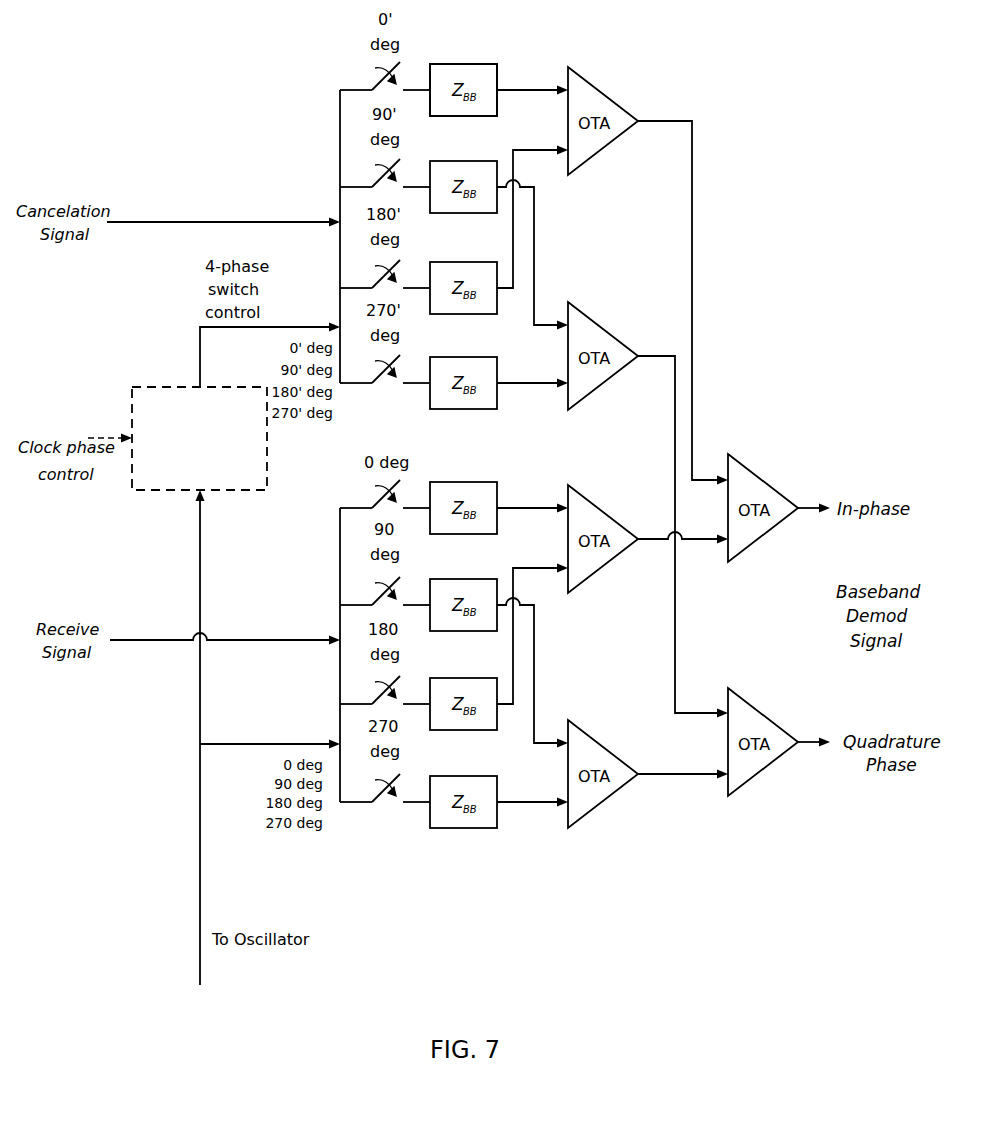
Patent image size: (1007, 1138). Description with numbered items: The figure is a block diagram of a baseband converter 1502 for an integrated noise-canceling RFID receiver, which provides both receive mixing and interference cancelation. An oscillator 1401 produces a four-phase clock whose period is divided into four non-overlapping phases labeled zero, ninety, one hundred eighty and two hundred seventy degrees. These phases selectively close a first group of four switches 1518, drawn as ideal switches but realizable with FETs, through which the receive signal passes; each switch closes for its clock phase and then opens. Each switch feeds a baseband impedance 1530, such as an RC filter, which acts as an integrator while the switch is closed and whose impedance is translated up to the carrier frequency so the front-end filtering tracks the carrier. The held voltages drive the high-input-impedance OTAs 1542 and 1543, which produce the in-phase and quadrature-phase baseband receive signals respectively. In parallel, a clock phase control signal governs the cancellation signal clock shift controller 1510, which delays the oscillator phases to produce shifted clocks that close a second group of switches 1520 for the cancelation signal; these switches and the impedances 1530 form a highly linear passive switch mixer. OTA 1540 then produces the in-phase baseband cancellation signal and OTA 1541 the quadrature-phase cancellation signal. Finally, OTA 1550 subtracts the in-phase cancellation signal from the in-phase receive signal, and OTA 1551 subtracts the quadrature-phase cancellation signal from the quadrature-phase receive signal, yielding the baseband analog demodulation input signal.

The oscillator 1401 is at (240, 737).
The baseband converter 1502 is at (665, 878).
The cancellation signal clock shift controller 1510 is at (230, 492).
The first group of four switches 1518 is at (373, 802).
The second group of switches 1520 is at (372, 88).
The baseband impedance 1530 is at (465, 65).
The OTA 1540 is at (603, 95).
The OTA 1541 is at (612, 332).
The OTA 1542 is at (593, 503).
The OTA 1543 is at (605, 803).
The OTA 1550 is at (777, 492).
The OTA 1551 is at (760, 715).